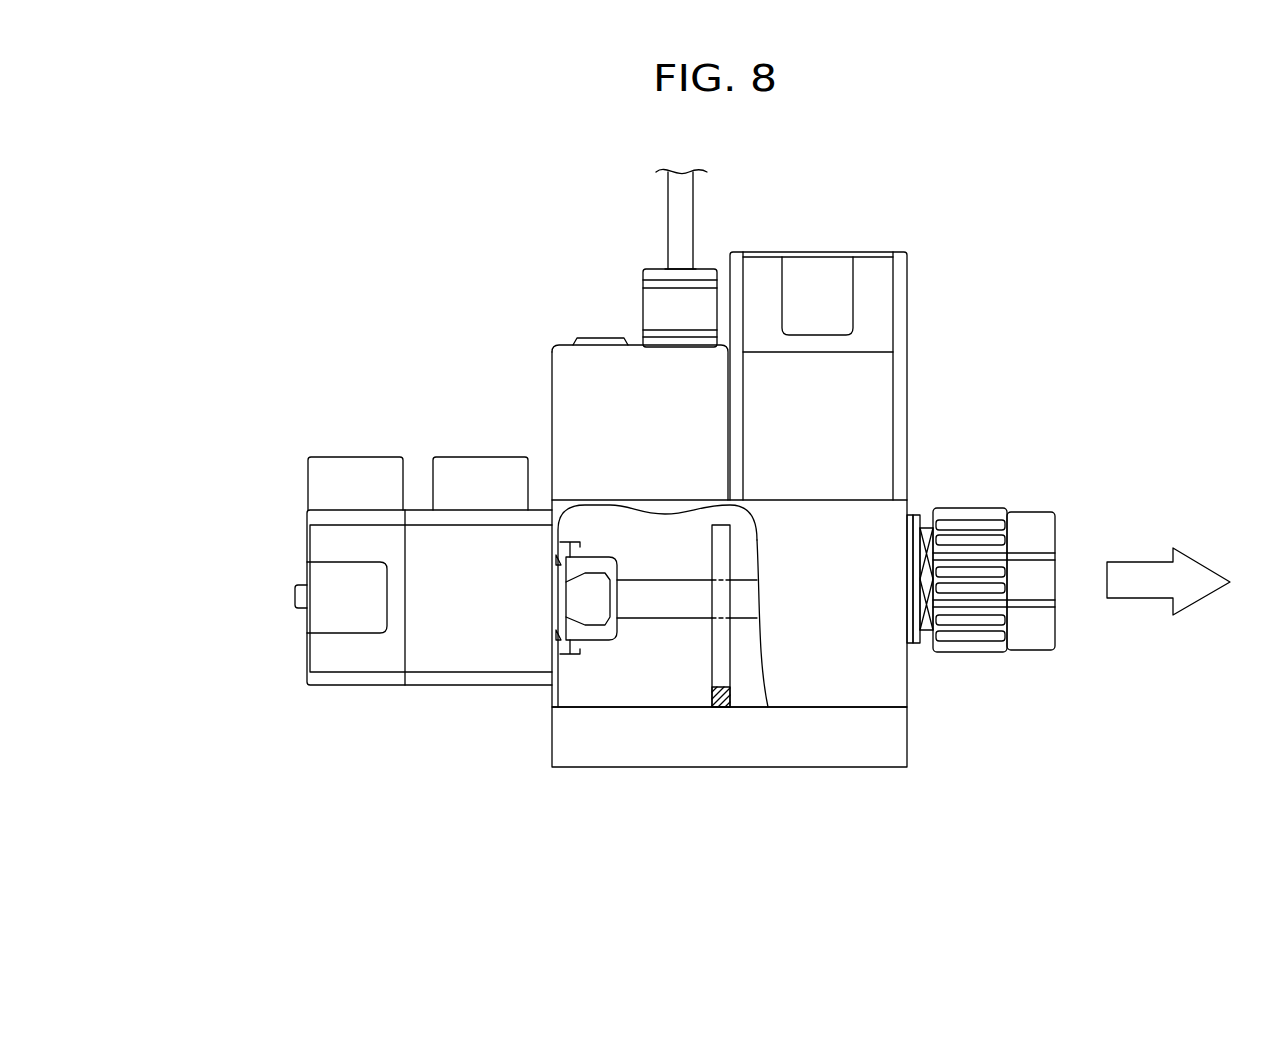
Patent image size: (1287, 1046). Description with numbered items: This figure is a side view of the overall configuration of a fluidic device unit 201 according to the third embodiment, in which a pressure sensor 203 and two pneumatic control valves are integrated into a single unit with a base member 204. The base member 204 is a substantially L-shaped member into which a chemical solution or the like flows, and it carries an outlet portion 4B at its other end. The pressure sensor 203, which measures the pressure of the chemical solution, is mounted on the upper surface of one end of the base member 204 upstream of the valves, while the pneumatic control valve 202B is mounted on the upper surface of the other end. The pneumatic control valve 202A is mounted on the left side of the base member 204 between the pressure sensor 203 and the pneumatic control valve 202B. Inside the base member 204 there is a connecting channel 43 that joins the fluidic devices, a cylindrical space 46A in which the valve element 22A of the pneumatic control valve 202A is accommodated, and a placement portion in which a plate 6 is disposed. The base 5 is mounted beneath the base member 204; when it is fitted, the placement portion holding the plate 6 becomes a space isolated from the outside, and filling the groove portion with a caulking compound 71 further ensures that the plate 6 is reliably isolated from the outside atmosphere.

The fluidic device unit 201 is at (330, 226).
The pneumatic control valve 202A is at (290, 545).
The pneumatic control valve 202B is at (822, 234).
The pressure sensor 203 is at (537, 342).
The base member 204 is at (924, 685).
The base 5 is at (845, 783).
The plate 6 is at (724, 538).
The caulking compound 71 is at (718, 710).
The connecting channel 43 is at (752, 590).
The valve element 22A is at (602, 600).
The cylindrical space 46A is at (600, 634).
The outlet portion 4B is at (1025, 508).